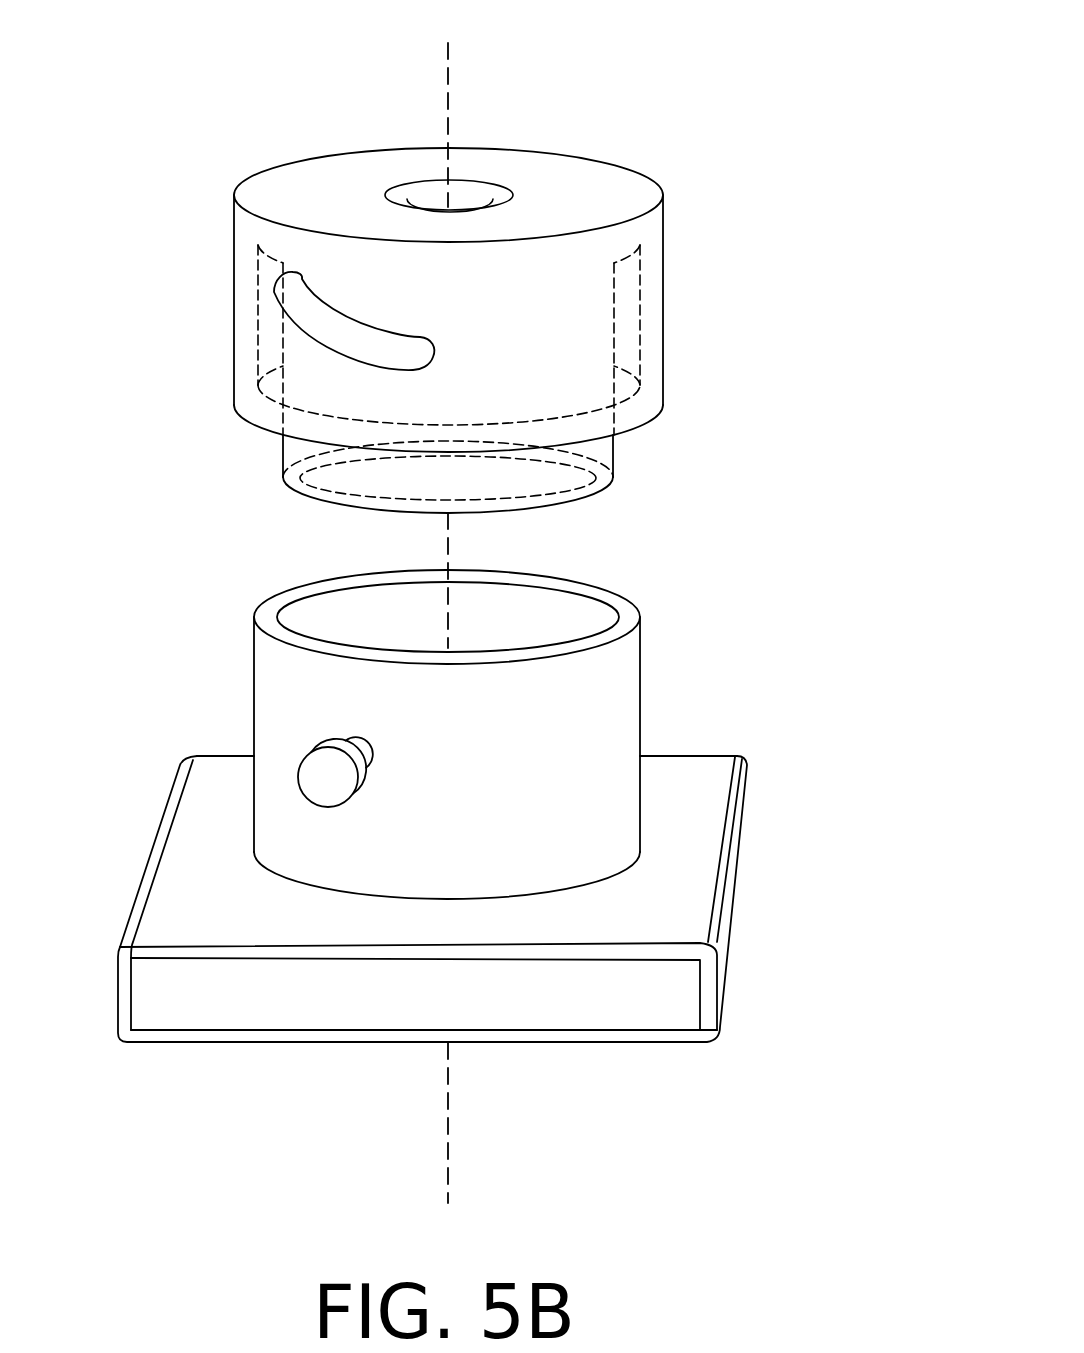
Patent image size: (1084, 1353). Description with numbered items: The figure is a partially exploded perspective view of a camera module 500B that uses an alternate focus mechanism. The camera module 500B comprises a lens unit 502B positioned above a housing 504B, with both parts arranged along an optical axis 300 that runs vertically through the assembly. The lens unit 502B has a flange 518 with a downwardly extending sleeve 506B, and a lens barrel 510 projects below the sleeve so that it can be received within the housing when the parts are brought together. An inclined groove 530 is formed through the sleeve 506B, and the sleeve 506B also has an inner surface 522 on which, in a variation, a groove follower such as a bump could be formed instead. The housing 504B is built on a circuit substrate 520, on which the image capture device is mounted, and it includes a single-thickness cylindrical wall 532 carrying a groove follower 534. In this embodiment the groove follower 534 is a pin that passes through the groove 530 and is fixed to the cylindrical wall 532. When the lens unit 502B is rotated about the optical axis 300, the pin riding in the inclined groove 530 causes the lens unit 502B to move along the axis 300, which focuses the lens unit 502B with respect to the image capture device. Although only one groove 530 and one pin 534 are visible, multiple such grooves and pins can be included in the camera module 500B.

The camera module 500B is at (244, 50).
The optical axis 300 is at (453, 604).
The lens unit 502B is at (722, 218).
The sleeve 506B is at (650, 330).
The flange 518 is at (258, 229).
The inclined groove 530 is at (305, 312).
The inner surface 522 is at (258, 357).
The lens barrel 510 is at (616, 452).
The housing 504B is at (805, 712).
The cylindrical wall 532 is at (268, 645).
The groove follower 534 is at (333, 772).
The circuit substrate 520 is at (528, 1043).